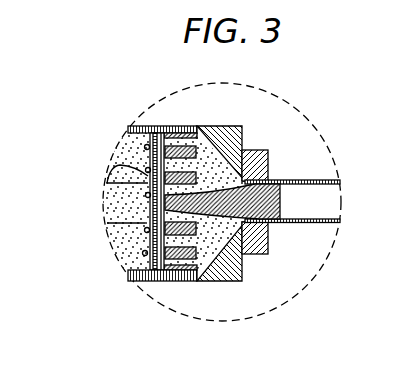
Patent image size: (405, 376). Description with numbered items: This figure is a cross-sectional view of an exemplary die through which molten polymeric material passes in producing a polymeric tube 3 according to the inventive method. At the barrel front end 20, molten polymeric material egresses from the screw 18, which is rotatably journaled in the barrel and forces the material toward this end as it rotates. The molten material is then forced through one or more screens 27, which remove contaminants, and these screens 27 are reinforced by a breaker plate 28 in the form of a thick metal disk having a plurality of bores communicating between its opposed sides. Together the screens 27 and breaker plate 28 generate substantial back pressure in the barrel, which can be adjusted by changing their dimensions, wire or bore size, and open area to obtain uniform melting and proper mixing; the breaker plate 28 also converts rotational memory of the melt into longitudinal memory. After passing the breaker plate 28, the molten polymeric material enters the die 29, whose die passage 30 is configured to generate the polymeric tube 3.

The polymeric tube 3 is at (303, 178).
The screw 18 is at (116, 165).
The barrel front end 20 is at (137, 126).
The screens 27 is at (138, 284).
The breaker plate 28 is at (183, 256).
The die 29 is at (238, 282).
The die passage 30 is at (216, 173).